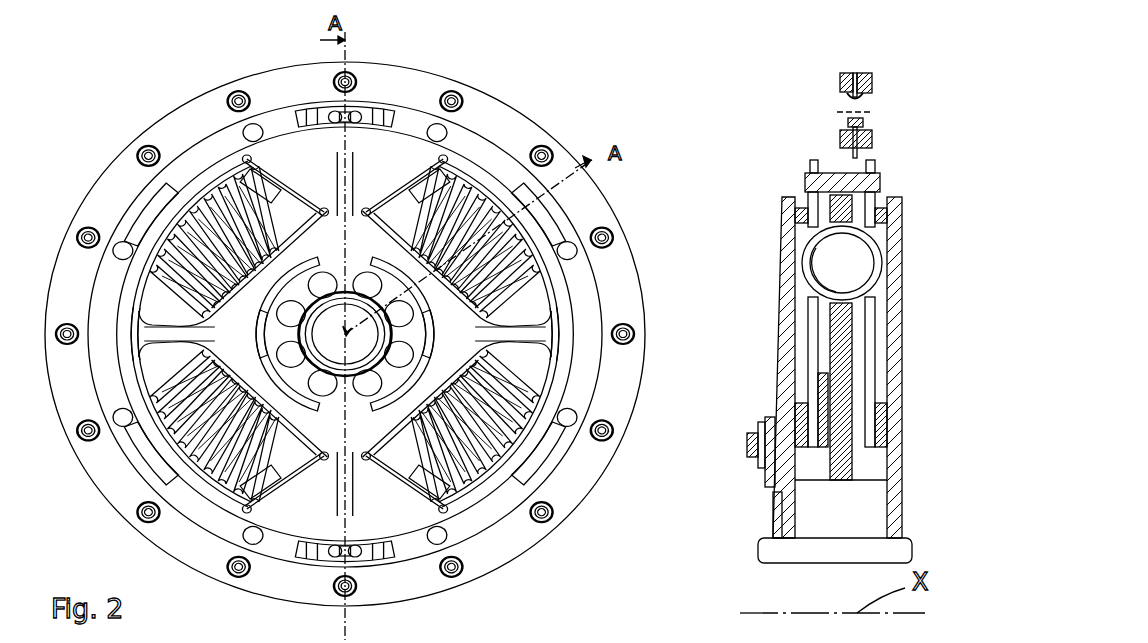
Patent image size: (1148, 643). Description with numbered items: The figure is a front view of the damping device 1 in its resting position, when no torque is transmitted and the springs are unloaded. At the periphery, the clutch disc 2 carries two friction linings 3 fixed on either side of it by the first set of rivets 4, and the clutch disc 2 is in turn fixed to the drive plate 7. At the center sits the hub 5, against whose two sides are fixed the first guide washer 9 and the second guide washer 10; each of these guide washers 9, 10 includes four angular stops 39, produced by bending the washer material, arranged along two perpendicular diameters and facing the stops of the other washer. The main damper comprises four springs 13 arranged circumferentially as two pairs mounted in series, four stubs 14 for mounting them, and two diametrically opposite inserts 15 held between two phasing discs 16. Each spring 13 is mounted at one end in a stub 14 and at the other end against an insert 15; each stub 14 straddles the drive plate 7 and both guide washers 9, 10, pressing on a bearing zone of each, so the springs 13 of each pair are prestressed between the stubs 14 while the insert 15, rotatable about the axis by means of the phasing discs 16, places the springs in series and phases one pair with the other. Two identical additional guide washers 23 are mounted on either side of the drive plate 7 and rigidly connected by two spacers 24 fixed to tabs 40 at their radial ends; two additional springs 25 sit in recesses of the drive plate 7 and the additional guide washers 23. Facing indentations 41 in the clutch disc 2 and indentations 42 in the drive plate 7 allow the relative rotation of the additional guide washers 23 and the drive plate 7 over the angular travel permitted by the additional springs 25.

The damping device 1 is at (566, 90).
The clutch disc 2 is at (478, 102).
The friction linings 3 is at (520, 276).
The first set of rivets 4 is at (872, 100).
The hub 5 is at (345, 378).
The drive plate 7 is at (852, 385).
The first guide washer 9 is at (295, 138).
The second guide washer 10 is at (788, 262).
The springs 13 is at (190, 205).
The stubs 14 is at (250, 162).
The inserts 15 is at (162, 290).
The phasing discs 16 is at (800, 415).
The additional guide washers 23 is at (813, 340).
The spacers 24 is at (878, 184).
The additional springs 25 is at (880, 288).
The angular stops 39 is at (150, 196).
The tabs 40 is at (362, 110).
The indentations 41 is at (386, 114).
The indentations 42 is at (402, 560).